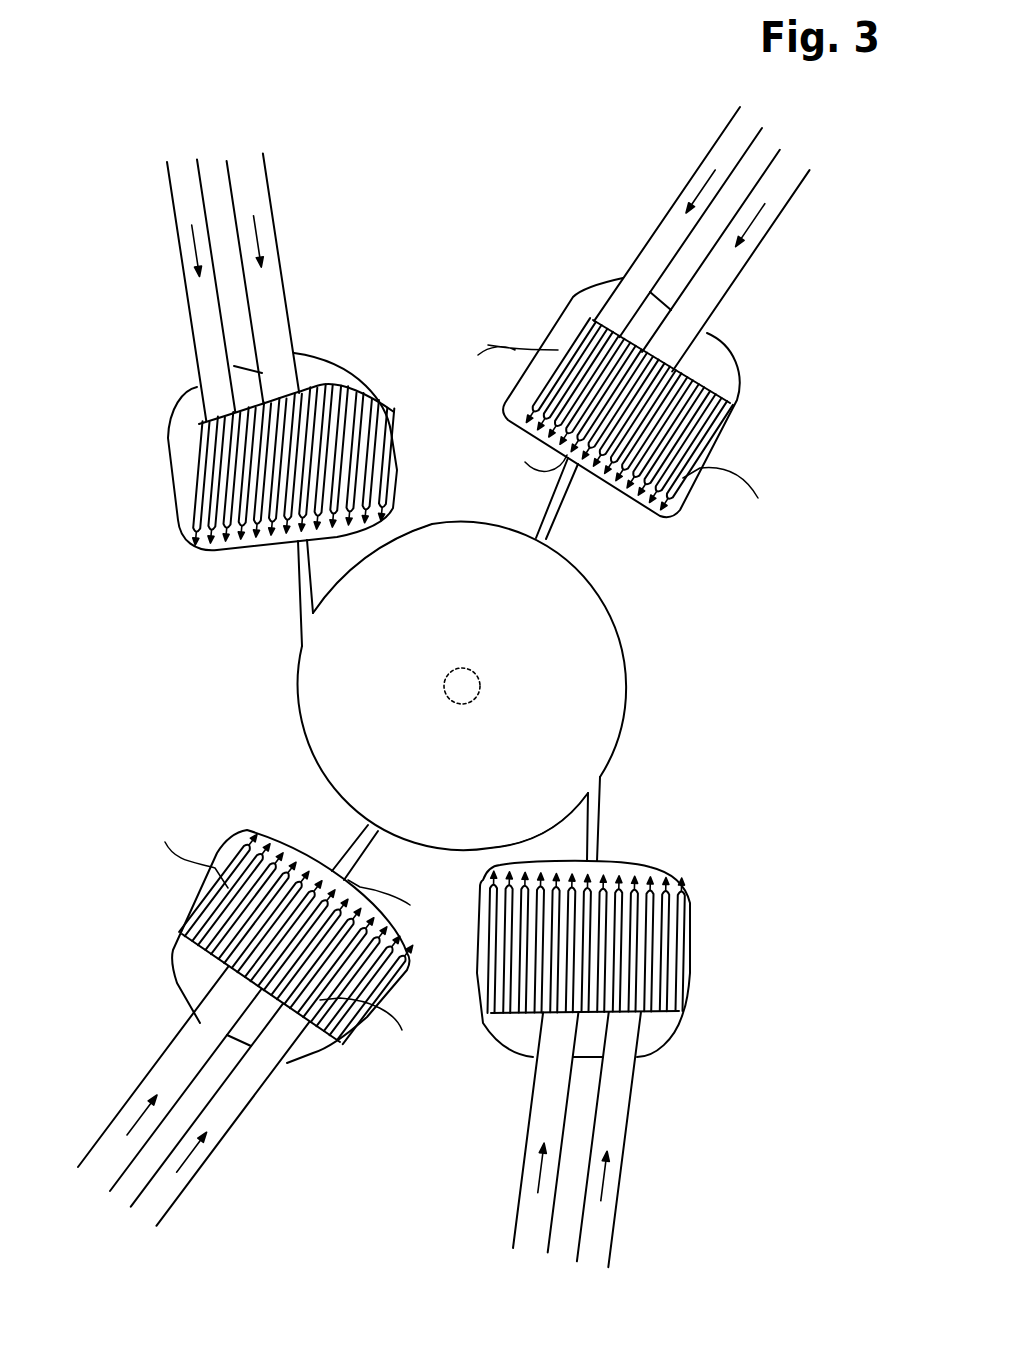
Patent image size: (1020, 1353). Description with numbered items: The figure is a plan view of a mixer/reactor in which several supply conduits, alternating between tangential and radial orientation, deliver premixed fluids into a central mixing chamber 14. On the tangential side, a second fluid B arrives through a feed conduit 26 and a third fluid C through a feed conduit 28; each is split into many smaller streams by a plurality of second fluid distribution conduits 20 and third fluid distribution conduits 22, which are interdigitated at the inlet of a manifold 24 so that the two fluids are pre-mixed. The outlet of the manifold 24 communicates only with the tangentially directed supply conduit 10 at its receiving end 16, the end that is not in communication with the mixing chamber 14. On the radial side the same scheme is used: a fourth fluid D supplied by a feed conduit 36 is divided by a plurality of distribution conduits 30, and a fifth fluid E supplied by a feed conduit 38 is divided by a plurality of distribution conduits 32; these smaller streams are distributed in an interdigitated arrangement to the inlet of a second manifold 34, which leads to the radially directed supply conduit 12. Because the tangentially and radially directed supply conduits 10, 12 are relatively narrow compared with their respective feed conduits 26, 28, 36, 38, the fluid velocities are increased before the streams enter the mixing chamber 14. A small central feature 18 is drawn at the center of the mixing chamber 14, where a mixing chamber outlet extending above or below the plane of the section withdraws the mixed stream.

The tangentially directed supply conduit 10 is at (292, 588).
The radially directed supply conduit 12 is at (547, 510).
The mixing chamber 14 is at (462, 686).
The receiving end 16 is at (297, 600).
The central opening 18 is at (478, 690).
The second fluid distribution conduits 20 is at (320, 435).
The third fluid distribution conduits 22 is at (262, 475).
The manifold 24 is at (262, 543).
The feed conduit 26 is at (263, 222).
The feed conduit 28 is at (190, 206).
The distribution conduits 30 is at (469, 677).
The distribution conduits 32 is at (439, 691).
The second manifold 34 is at (457, 688).
The feed conduit 36 is at (727, 140).
The feed conduit 38 is at (778, 218).